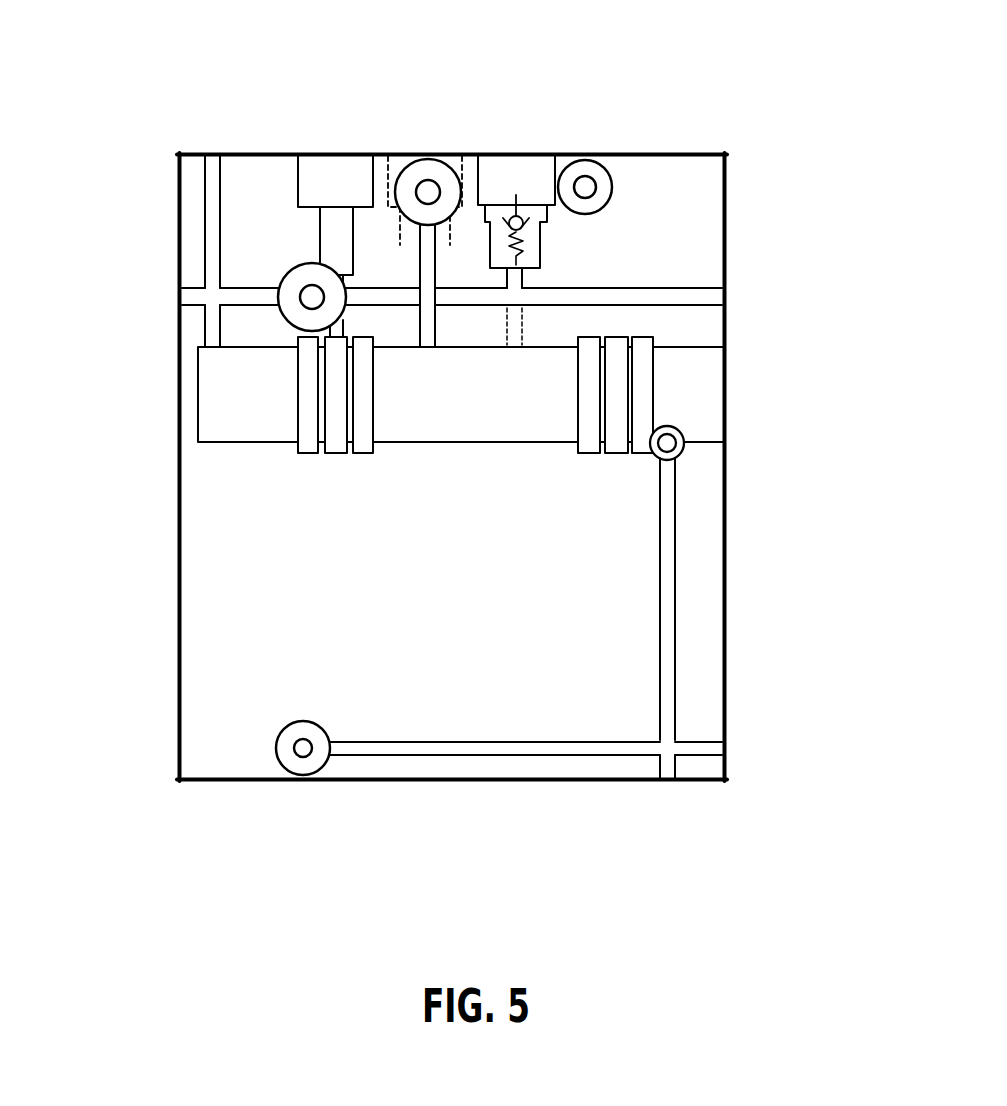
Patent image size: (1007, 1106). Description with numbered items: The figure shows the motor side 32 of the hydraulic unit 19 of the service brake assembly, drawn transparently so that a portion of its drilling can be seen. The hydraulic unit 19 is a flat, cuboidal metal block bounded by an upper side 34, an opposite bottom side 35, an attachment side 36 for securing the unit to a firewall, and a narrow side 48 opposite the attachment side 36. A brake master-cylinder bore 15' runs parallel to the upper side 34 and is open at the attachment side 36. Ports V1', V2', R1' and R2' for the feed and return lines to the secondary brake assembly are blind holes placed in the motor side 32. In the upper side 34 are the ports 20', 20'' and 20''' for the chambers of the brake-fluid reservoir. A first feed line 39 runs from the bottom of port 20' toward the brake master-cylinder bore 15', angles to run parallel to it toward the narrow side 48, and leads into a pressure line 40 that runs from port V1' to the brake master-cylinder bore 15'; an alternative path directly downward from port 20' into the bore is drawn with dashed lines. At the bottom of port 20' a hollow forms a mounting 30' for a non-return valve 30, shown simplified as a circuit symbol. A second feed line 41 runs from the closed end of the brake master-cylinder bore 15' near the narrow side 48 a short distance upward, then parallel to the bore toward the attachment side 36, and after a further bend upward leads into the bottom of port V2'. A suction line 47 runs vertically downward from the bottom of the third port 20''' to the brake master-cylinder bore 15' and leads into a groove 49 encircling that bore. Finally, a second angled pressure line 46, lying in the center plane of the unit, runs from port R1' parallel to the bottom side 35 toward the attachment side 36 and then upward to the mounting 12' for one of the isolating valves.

The hydraulic unit 19 is at (149, 113).
The motor side 32 is at (445, 627).
The upper side 34 is at (227, 153).
The bottom side 35 is at (490, 780).
The attachment side 36 is at (727, 595).
The narrow side 48 is at (177, 598).
The second feed line 41 is at (252, 295).
The third port 20''' is at (335, 134).
The suction line 47 is at (336, 227).
The port V2' is at (299, 214).
The pressure line 40 is at (423, 253).
The port 20'' is at (435, 144).
The port V1' is at (428, 120).
The first feed line 39 is at (465, 297).
The port 20' is at (516, 134).
The non-return valve 30 is at (535, 172).
The mounting 30' is at (554, 223).
The port R2' is at (615, 137).
The brake master-cylinder bore 15' is at (505, 395).
The groove 49 is at (335, 447).
The mounting 12' is at (722, 449).
The second pressure line 46 is at (668, 720).
The port R1' is at (303, 803).